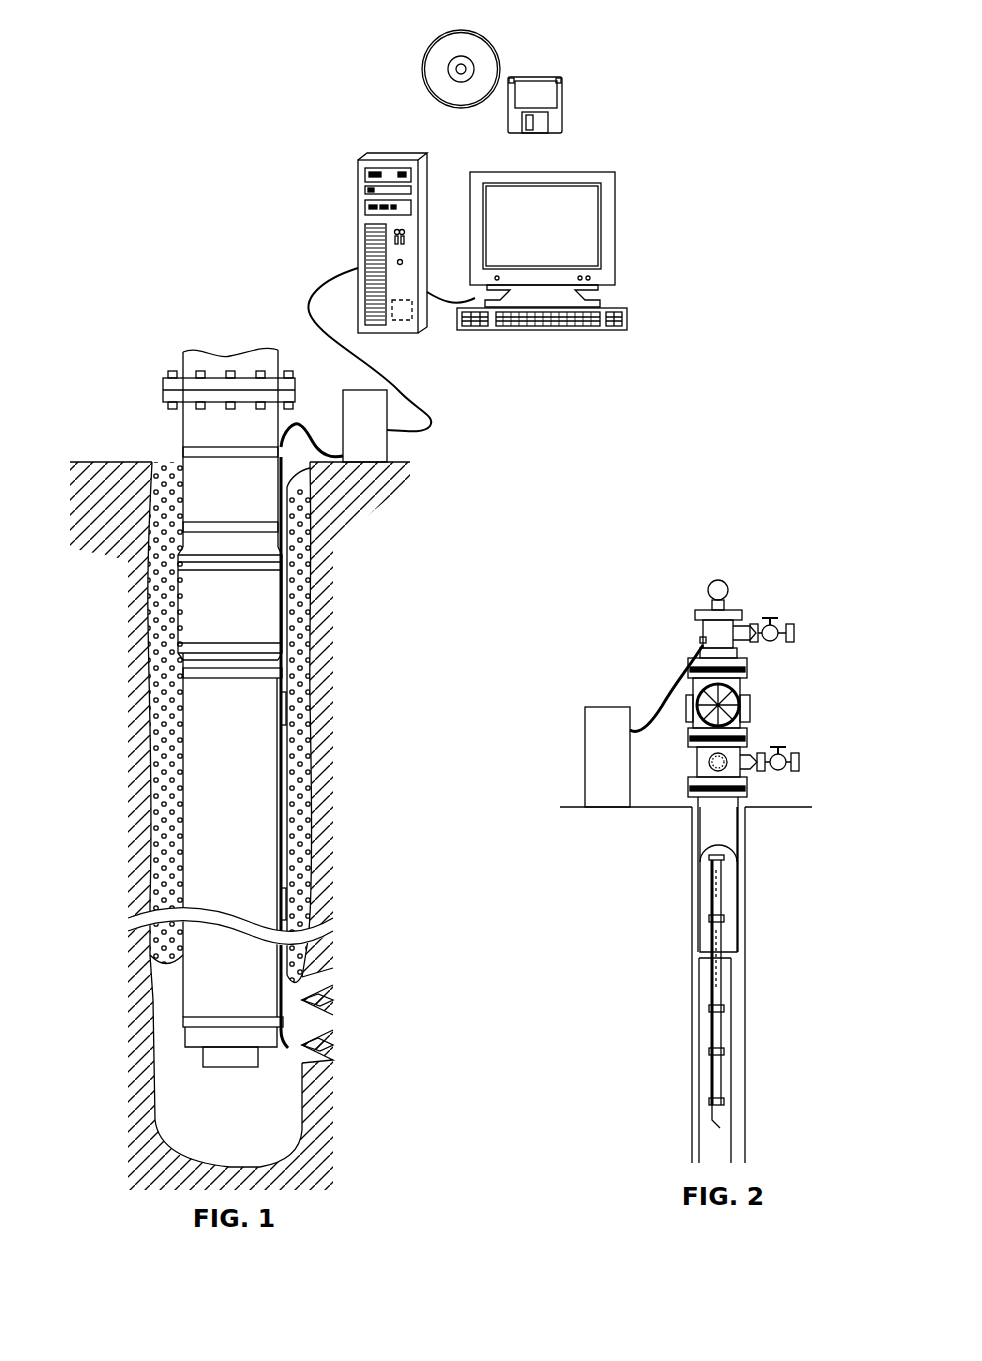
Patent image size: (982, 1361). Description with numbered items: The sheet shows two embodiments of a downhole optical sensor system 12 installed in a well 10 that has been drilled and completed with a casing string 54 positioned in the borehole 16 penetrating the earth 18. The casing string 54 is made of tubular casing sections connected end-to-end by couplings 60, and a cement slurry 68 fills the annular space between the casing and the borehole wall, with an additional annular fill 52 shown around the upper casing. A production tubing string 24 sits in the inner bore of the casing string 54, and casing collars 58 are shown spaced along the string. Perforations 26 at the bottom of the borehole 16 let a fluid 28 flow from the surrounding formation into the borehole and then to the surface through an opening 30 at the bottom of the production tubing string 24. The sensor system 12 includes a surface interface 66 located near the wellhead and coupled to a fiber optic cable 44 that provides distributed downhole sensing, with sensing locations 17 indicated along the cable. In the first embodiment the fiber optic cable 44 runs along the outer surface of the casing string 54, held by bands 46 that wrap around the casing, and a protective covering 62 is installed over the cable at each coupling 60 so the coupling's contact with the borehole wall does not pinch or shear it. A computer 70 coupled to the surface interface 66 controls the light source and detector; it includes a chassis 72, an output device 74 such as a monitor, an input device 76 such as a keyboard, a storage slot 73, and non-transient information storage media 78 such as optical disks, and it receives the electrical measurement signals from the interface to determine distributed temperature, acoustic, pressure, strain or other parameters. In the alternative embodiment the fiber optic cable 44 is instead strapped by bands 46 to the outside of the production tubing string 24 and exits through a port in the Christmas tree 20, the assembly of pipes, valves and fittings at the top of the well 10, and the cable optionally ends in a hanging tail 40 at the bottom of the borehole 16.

In FIG. 1, the well 10 is at (145, 282).
In FIG. 1, the downhole optical sensor system 12 is at (308, 236).
In FIG. 2, the downhole optical sensor system 12 is at (620, 638).
In FIG. 1, the borehole 16 is at (168, 460).
In FIG. 1, the sensors 17 is at (285, 713).
In FIG. 1, the earth 18 is at (110, 496).
In FIG. 2, the Christmas tree 20 is at (808, 612).
In FIG. 1, the production tubing string 24 is at (217, 1060).
In FIG. 2, the production tubing string 24 is at (723, 1030).
In FIG. 1, the perforations 26 is at (348, 968).
In FIG. 1, the fluid 28 is at (298, 1053).
In FIG. 1, the opening 30 is at (225, 1074).
In FIG. 2, the hanging tail 40 is at (722, 1130).
In FIG. 1, the fiber optic cable 44 is at (300, 427).
In FIG. 2, the fiber optic cable 44 is at (668, 690).
In FIG. 2, the bands 46 is at (728, 862).
In FIG. 1, the cement 52 is at (312, 552).
In FIG. 1, the casing string 54 is at (184, 437).
In FIG. 2, the casing string 54 is at (740, 845).
In FIG. 1, the casing collars 58 is at (212, 447).
In FIG. 1, the couplings 60 is at (265, 623).
In FIG. 1, the protective covering 62 is at (287, 598).
In FIG. 1, the surface interface 66 is at (388, 458).
In FIG. 2, the surface interface 66 is at (585, 774).
In FIG. 1, the cement slurry 68 is at (300, 782).
In FIG. 1, the computer 70 is at (606, 92).
In FIG. 1, the chassis 72 is at (430, 187).
In FIG. 1, the storage medium 73 is at (397, 318).
In FIG. 1, the output device 74 is at (617, 237).
In FIG. 1, the input device 76 is at (612, 308).
In FIG. 1, the non-transient information storage media 78 is at (497, 56).